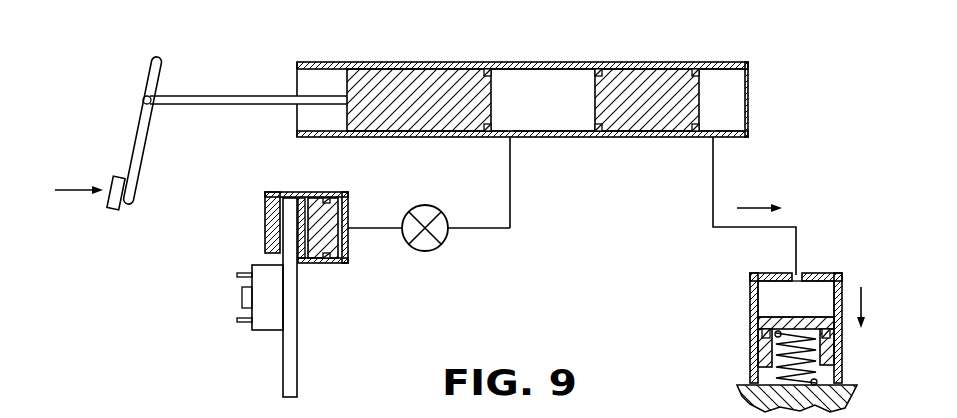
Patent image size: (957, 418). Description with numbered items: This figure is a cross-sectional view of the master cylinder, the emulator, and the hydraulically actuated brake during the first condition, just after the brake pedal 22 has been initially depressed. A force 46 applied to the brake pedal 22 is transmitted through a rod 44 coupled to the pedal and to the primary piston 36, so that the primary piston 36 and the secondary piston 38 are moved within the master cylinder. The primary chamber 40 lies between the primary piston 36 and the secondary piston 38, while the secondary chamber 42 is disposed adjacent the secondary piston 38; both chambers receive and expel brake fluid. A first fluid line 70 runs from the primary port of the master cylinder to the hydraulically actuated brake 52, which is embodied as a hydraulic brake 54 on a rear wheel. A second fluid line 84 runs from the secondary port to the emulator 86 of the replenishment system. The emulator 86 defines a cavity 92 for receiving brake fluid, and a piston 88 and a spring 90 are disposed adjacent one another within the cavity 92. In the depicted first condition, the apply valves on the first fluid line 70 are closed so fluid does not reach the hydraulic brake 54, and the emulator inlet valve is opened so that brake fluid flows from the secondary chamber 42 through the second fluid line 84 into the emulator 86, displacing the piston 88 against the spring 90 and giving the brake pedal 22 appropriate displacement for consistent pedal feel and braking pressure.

The brake pedal 22 is at (133, 138).
The primary piston 36 is at (373, 72).
The secondary piston 38 is at (630, 67).
The primary chamber 40 is at (540, 83).
The secondary chamber 42 is at (723, 80).
The rod 44 is at (230, 96).
The force 46 is at (77, 190).
The hydraulically actuated brake 52 is at (240, 200).
The hydraulic brakes 54 is at (335, 265).
The first fluid line 70 is at (512, 198).
The second fluid line 84 is at (787, 225).
The emulator 86 is at (845, 283).
The piston 88 is at (770, 360).
The spring 90 is at (817, 368).
The cavity 92 is at (765, 310).